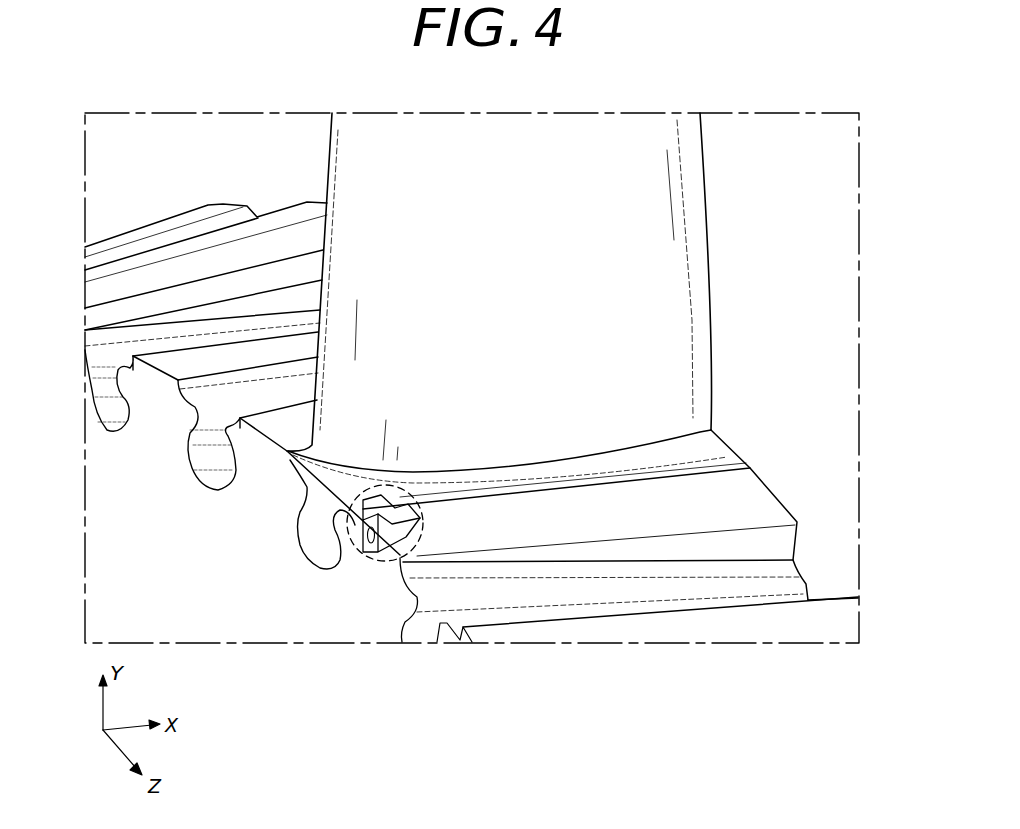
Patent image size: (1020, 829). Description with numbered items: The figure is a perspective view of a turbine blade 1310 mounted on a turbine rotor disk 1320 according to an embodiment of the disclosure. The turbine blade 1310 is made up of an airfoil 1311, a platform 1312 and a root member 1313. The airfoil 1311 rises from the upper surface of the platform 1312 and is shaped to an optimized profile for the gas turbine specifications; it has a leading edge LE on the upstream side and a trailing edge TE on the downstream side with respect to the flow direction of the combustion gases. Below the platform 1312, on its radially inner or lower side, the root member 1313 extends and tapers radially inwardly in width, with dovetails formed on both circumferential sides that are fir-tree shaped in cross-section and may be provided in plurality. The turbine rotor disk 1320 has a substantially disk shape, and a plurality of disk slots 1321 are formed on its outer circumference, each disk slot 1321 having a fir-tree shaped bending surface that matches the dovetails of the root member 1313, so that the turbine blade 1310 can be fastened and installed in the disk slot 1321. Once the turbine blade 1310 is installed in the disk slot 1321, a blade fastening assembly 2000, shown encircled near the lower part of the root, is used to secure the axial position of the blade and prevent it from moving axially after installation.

The turbine blade 1310 is at (732, 328).
The airfoil 1311 is at (670, 250).
The platform 1312 is at (728, 460).
The root member 1313 is at (305, 522).
The turbine rotor disk 1320 is at (587, 517).
The disk slot 1321 is at (227, 410).
The blade fastening assembly 2000 is at (360, 578).
The leading edge LE is at (330, 158).
The trailing edge TE is at (702, 160).